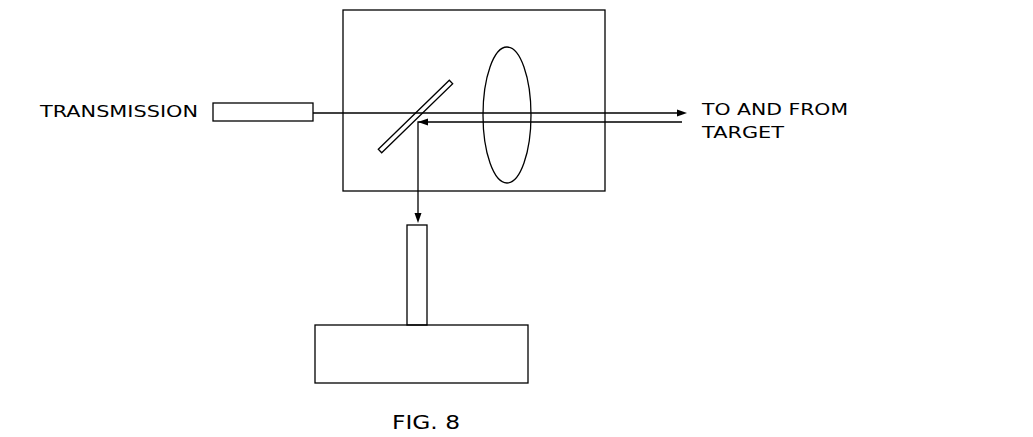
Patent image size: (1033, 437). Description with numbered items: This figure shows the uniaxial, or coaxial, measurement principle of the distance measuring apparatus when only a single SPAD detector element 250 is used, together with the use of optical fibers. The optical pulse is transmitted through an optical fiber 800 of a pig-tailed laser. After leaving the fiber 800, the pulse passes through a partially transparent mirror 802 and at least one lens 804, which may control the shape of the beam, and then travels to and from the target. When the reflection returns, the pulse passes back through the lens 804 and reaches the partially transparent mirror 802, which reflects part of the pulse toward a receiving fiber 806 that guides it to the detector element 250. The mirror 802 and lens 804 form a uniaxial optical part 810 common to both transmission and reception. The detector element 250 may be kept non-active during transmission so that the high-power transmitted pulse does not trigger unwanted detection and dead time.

The optical fiber 800 is at (245, 103).
The uniaxial optical part 810 is at (383, 39).
The lens 804 is at (507, 47).
The partially transparent mirror 802 is at (376, 148).
The receiving fiber 806 is at (407, 249).
The detector element 250 is at (488, 325).